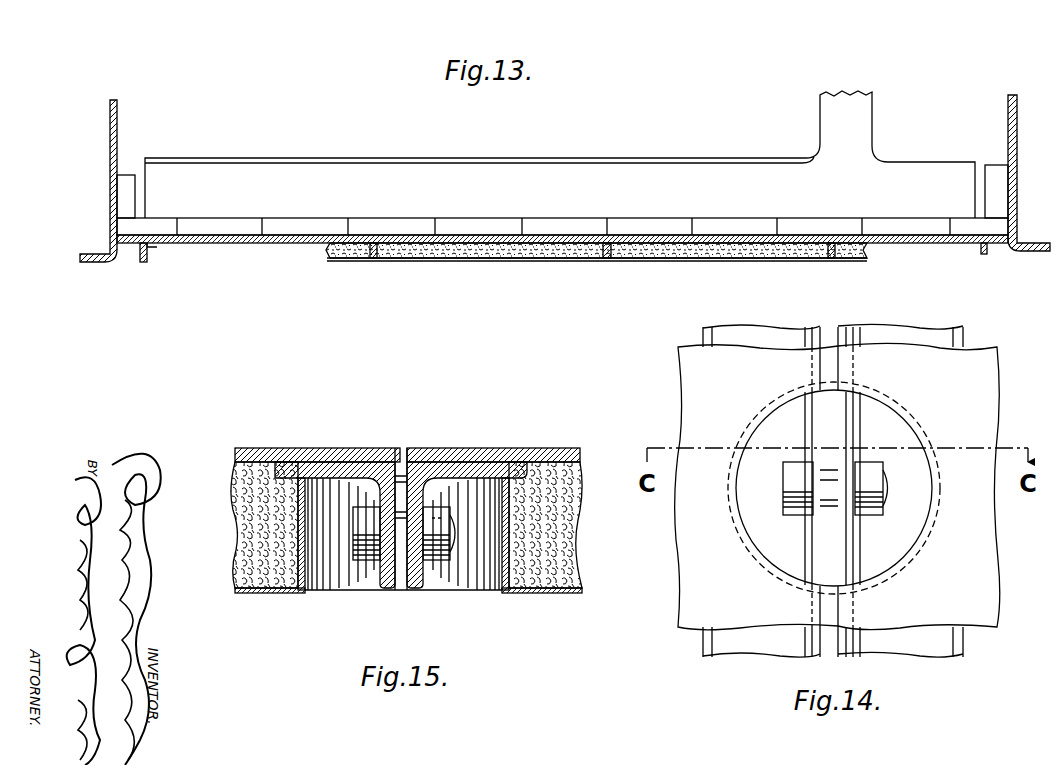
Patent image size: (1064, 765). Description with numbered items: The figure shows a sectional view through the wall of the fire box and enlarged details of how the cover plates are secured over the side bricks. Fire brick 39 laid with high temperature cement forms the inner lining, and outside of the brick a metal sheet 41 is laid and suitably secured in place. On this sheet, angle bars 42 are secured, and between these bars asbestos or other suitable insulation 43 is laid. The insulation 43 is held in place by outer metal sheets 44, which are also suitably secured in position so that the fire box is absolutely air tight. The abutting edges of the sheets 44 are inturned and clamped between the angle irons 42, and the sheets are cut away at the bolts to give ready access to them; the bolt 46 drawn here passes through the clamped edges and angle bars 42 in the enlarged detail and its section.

In FIG. 13, the fire brick 39 is at (642, 222).
In FIG. 13, the metal sheet 41 is at (278, 243).
In FIG. 13, the angle bars 42 is at (145, 262).
In FIG. 15, the angle bars 42 is at (428, 462).
In FIG. 14, the angle bars 42 is at (750, 333).
In FIG. 13, the insulation 43 is at (452, 260).
In FIG. 15, the insulation 43 is at (243, 516).
In FIG. 13, the metal sheets 44 is at (550, 261).
In FIG. 15, the metal sheets 44 is at (289, 593).
In FIG. 14, the metal sheets 44 is at (705, 394).
In FIG. 15, the bolt 46 is at (372, 553).
In FIG. 14, the bolt 46 is at (795, 478).